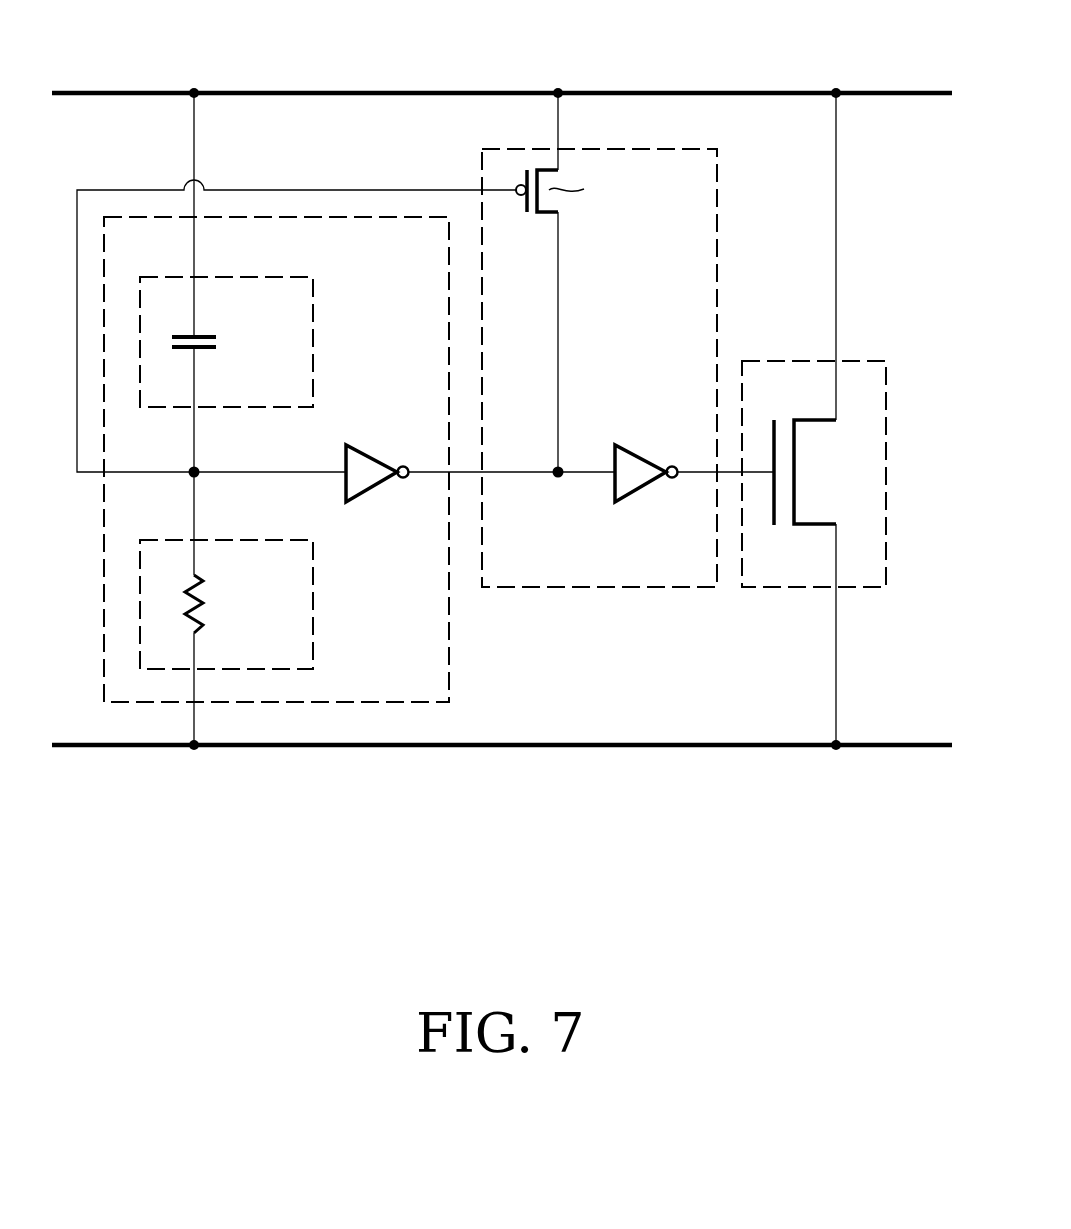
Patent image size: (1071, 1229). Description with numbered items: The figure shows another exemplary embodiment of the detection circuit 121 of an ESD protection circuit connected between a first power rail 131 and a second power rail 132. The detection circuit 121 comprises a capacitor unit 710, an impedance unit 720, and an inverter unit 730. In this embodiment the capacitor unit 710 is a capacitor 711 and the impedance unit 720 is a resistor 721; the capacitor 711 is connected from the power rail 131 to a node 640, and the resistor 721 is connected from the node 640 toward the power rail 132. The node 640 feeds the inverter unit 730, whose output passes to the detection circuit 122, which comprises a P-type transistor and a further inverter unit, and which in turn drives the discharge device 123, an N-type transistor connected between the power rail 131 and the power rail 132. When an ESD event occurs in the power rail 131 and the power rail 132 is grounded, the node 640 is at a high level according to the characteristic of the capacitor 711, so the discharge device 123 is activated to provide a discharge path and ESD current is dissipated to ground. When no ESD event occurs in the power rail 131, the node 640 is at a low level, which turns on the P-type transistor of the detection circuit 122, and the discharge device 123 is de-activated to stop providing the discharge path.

The power rail 131 is at (636, 91).
The power rail 132 is at (636, 748).
The detection circuit 121 is at (449, 643).
The detection circuit 122 is at (640, 588).
The discharge device 123 is at (780, 588).
The capacitor unit 710 is at (228, 277).
The capacitor 711 is at (216, 342).
The impedance unit 720 is at (228, 540).
The resistor 721 is at (204, 598).
The inverter unit 730 is at (376, 451).
The node 640 is at (198, 469).